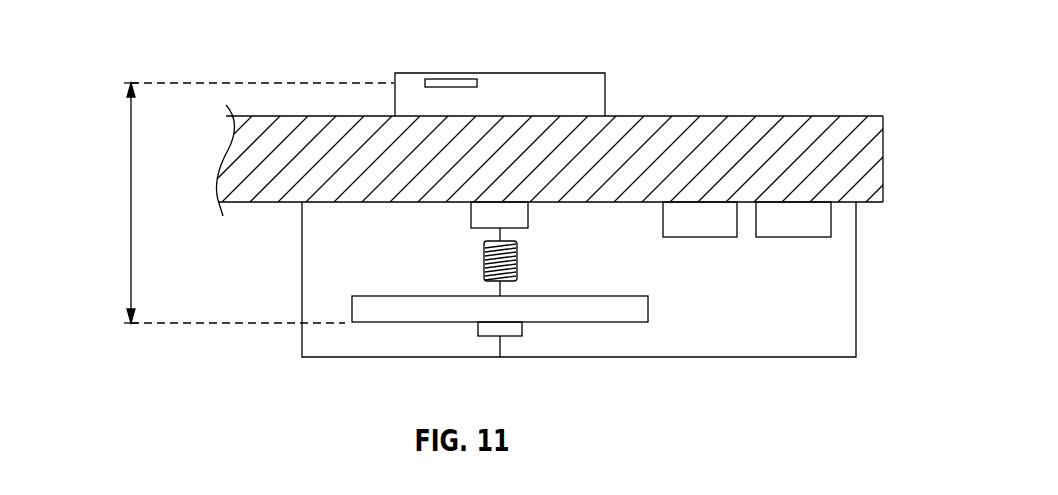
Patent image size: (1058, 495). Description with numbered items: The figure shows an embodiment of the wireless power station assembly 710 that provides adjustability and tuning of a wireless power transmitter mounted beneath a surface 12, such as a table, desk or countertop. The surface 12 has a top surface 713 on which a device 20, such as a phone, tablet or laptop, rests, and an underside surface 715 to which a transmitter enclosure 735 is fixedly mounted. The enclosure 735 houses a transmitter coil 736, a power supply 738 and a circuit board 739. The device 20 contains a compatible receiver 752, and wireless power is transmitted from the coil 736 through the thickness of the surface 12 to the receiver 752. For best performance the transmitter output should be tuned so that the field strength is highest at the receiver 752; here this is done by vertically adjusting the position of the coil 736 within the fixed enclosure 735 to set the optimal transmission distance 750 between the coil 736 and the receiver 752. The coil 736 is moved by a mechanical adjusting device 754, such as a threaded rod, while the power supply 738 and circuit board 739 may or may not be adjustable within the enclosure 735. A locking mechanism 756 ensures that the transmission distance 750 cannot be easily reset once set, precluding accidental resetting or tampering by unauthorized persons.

The sensing device assembly 710 is at (812, 36).
The surface 12 is at (892, 147).
The top surface 713 is at (818, 116).
The underside surface 715 is at (290, 204).
The device 20 is at (593, 94).
The receiver 752 is at (452, 82).
The transmission distance 750 is at (131, 197).
The transmitter enclosure 735 is at (360, 357).
The mechanical adjusting device 754 is at (484, 258).
The transmitter coil 736 is at (648, 297).
The locking mechanism 756 is at (520, 328).
The power supply 738 is at (698, 227).
The circuit board 739 is at (818, 218).